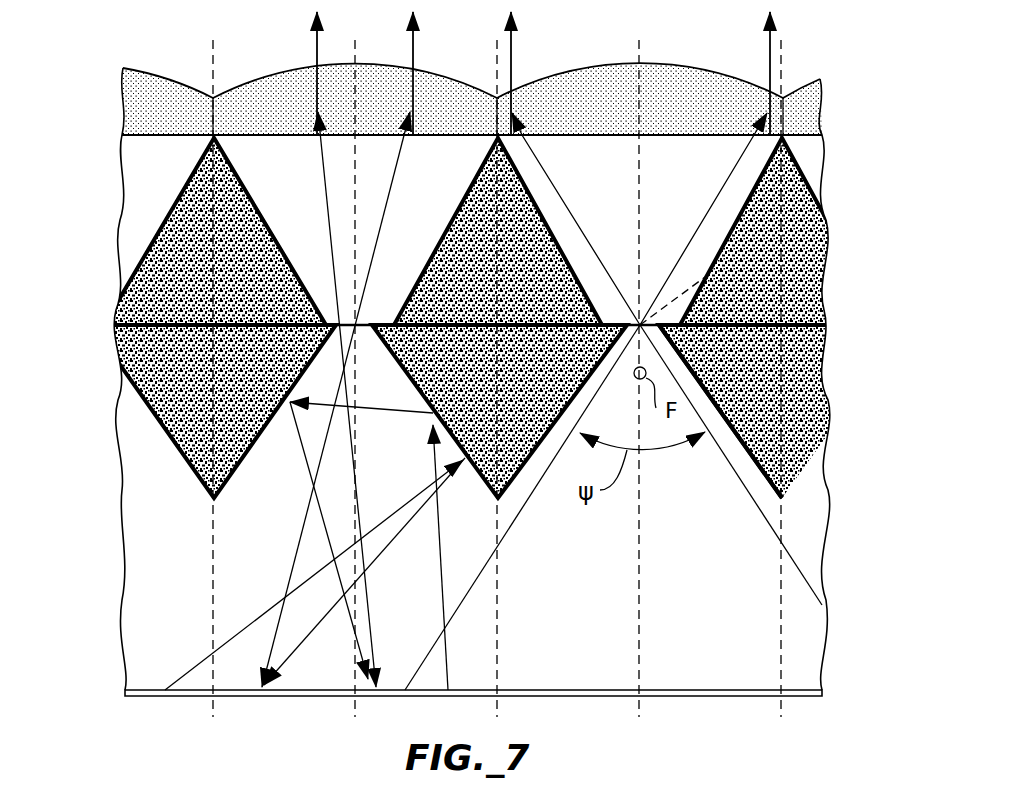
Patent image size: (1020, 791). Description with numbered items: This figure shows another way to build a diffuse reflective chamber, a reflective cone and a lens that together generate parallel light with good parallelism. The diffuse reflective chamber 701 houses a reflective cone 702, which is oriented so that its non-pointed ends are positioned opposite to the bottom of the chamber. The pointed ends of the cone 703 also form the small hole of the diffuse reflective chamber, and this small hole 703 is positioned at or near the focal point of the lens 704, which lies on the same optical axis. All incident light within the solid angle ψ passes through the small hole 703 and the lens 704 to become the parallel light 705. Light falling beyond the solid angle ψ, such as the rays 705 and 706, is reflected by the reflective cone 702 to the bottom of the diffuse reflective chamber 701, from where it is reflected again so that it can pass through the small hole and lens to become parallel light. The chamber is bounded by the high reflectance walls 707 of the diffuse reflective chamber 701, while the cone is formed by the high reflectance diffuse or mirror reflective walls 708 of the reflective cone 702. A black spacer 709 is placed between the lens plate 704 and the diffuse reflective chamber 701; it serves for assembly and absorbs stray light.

The diffuse reflective chamber 701 is at (752, 591).
The reflective cone 702 is at (170, 374).
The pointed ends of the cone 703 is at (353, 325).
The lens 704 is at (655, 73).
The parallel light 705 is at (416, 53).
The incident light beyond the solid angle 706 is at (388, 680).
The high reflectance walls of diffuse reflective chamber 707 is at (674, 689).
The high reflectance diffuse or mirror reflective walls of the reflective cone 708 is at (730, 424).
The black spacer 709 is at (785, 318).